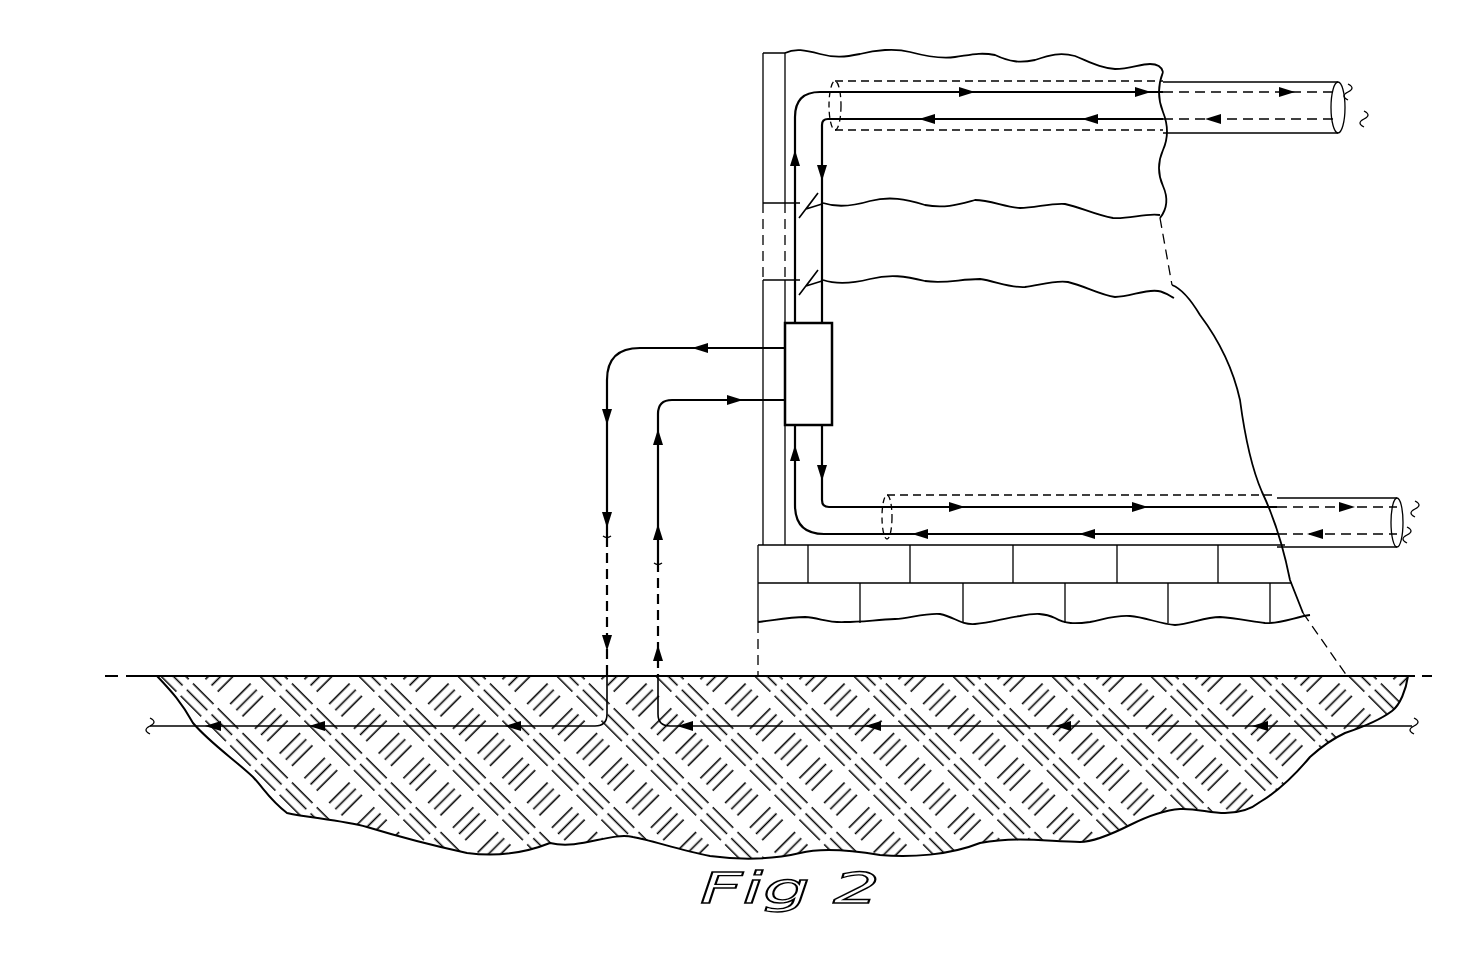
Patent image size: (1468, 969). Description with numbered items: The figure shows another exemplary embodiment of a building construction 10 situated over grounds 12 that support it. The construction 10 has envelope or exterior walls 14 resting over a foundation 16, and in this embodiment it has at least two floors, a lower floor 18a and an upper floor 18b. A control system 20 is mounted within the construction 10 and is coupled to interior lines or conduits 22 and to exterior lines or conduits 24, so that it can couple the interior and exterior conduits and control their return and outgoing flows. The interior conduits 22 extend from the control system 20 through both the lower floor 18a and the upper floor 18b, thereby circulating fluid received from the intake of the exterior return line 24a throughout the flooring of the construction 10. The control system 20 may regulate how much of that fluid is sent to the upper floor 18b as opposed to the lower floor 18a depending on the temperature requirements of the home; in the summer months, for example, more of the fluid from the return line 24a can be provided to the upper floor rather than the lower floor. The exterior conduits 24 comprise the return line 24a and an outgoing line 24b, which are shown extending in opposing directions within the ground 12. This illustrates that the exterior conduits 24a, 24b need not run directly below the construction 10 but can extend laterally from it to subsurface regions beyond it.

The building construction 10 is at (557, 183).
The grounds 12 is at (402, 672).
The envelope or exterior walls 14 is at (763, 133).
The foundation 16 is at (817, 600).
The floor 18a is at (1318, 497).
The floor 18b is at (1240, 82).
The control system 20 is at (815, 373).
The interior lines (conduits) 22 is at (815, 125).
The exterior lines (conduits) 24 is at (638, 390).
The return line 24a is at (660, 622).
The outgoing line 24b is at (603, 622).